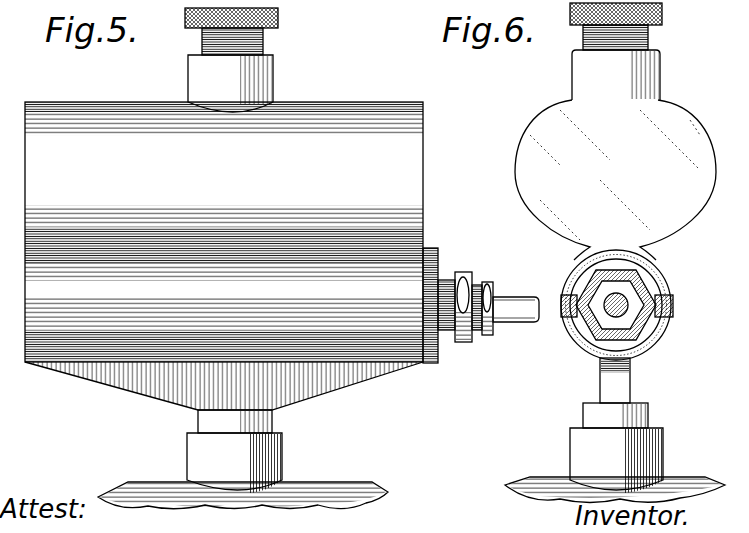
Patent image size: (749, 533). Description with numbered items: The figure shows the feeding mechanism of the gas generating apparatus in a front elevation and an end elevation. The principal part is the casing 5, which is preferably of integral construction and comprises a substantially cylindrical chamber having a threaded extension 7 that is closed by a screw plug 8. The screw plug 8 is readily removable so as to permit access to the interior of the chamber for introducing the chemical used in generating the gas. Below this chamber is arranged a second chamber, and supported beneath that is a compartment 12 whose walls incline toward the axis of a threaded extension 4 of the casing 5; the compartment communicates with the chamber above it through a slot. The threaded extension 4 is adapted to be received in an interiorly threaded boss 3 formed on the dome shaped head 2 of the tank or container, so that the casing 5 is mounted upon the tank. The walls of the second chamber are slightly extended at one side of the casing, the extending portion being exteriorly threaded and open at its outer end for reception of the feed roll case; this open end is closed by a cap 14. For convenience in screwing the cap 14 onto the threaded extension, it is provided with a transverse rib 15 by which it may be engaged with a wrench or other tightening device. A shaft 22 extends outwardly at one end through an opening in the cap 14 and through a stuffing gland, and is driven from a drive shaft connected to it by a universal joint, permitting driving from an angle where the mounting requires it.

In FIG. 5, the dome shaped head 2 is at (318, 487).
In FIG. 6, the dome shaped head 2 is at (680, 480).
In FIG. 5, the interiorly threaded boss 3 is at (278, 456).
In FIG. 6, the interiorly threaded boss 3 is at (664, 440).
In FIG. 5, the threaded extension 4 is at (273, 421).
In FIG. 6, the threaded extension 4 is at (650, 414).
In FIG. 5, the casing 5 is at (231, 256).
In FIG. 6, the casing 5 is at (615, 180).
In FIG. 5, the threaded extension 7 is at (250, 82).
In FIG. 6, the threaded extension 7 is at (637, 80).
In FIG. 5, the screw plug 8 is at (278, 14).
In FIG. 6, the screw plug 8 is at (662, 10).
In FIG. 5, the compartment 12 is at (332, 382).
In FIG. 6, the compartment 12 is at (631, 380).
In FIG. 5, the cap 14 is at (462, 285).
In FIG. 6, the cap 14 is at (640, 290).
In FIG. 6, the transverse rib 15 is at (668, 300).
In FIG. 5, the shaft 22 is at (517, 300).
In FIG. 6, the shaft 22 is at (625, 312).